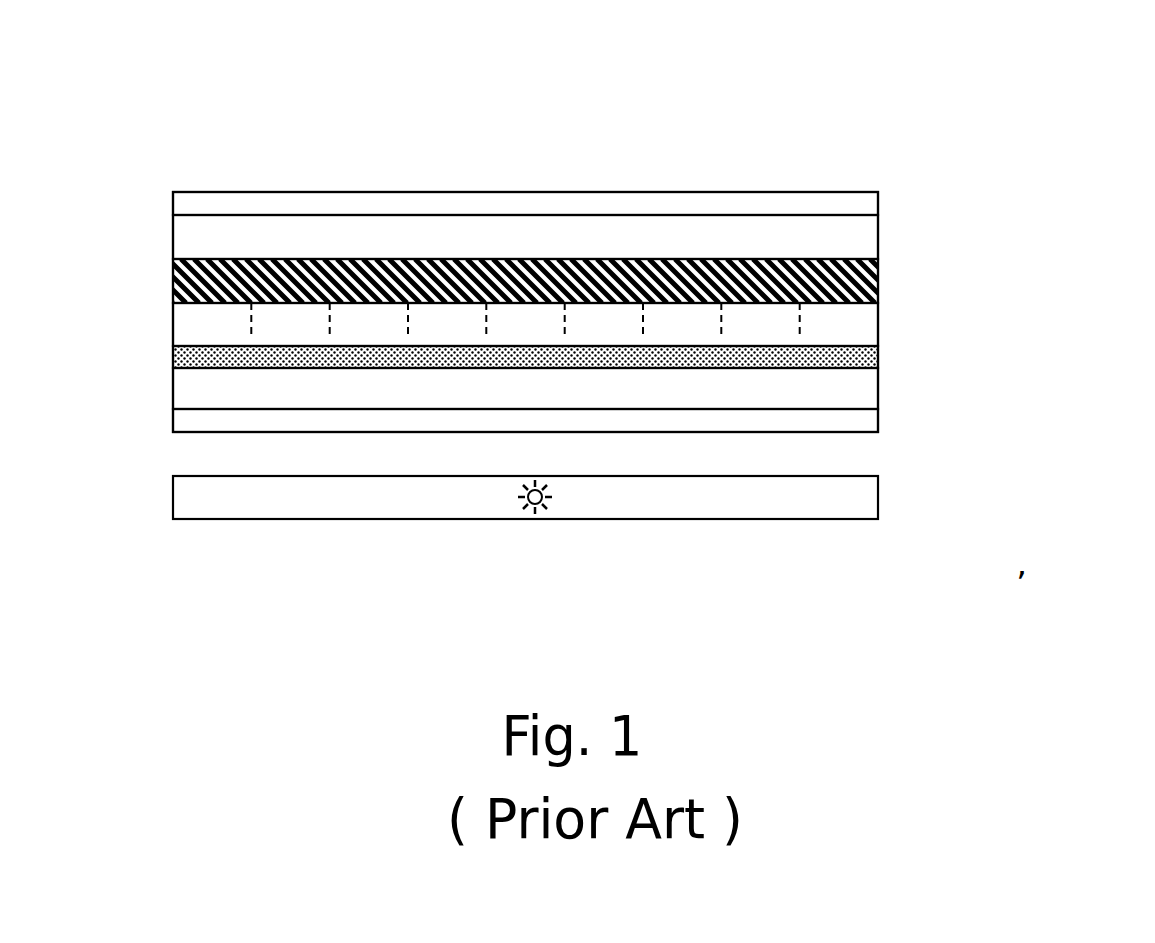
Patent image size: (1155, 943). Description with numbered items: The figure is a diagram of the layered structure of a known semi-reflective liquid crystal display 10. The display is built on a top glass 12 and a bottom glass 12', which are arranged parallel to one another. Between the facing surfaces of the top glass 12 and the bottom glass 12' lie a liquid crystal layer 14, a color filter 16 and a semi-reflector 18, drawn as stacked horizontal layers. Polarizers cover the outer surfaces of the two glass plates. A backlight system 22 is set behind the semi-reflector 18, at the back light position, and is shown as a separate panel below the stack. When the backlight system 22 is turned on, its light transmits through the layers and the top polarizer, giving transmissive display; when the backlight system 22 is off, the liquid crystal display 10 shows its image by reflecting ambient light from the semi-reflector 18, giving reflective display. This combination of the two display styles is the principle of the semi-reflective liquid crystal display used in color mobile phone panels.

The liquid crystal display 10 is at (268, 157).
The top glass 12 is at (600, 226).
The liquid crystal layer 14 is at (870, 272).
The color filter 16 is at (865, 320).
The semi-reflector 18 is at (870, 353).
The bottom glass 12' is at (638, 438).
The backlight system 22 is at (832, 502).